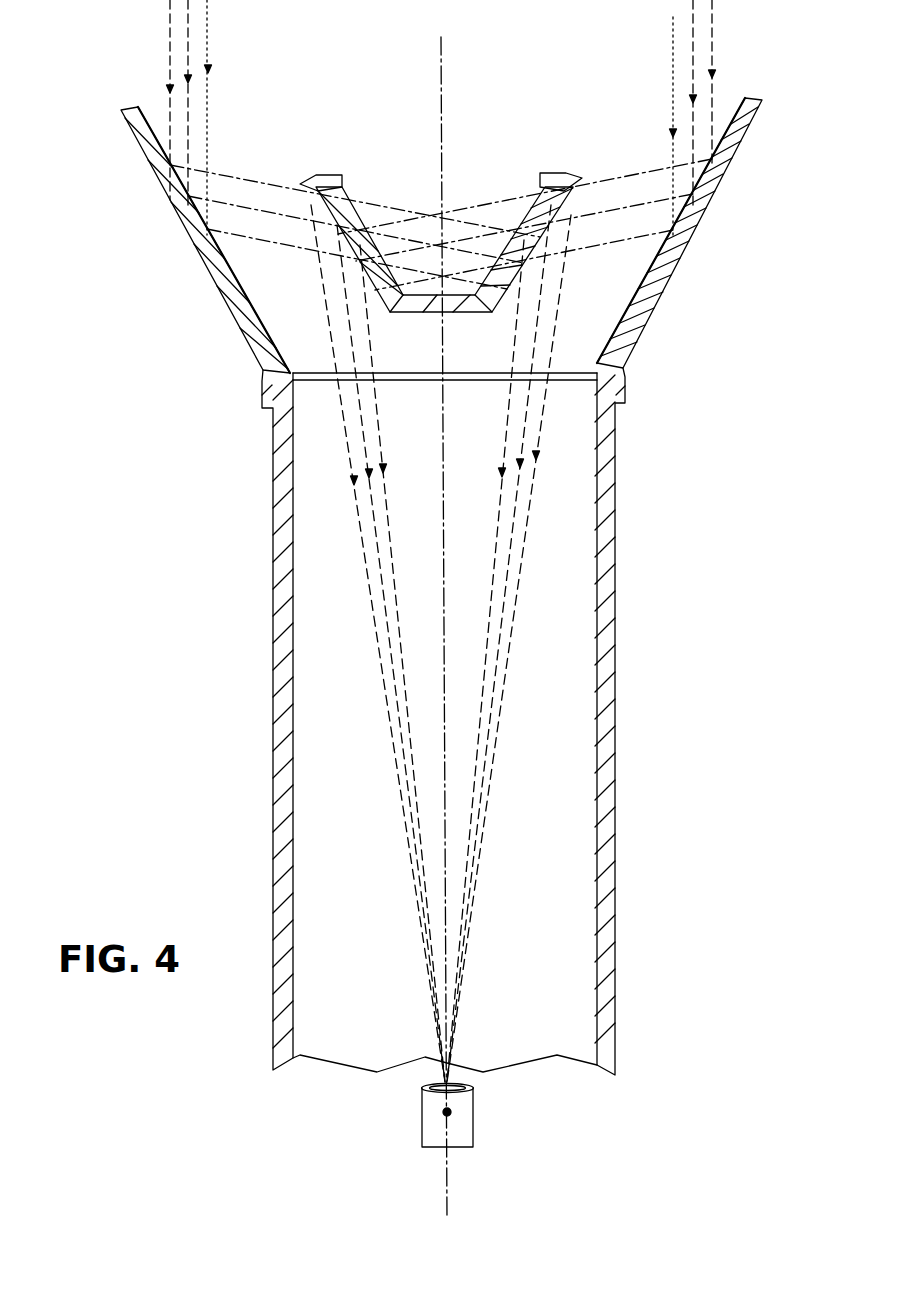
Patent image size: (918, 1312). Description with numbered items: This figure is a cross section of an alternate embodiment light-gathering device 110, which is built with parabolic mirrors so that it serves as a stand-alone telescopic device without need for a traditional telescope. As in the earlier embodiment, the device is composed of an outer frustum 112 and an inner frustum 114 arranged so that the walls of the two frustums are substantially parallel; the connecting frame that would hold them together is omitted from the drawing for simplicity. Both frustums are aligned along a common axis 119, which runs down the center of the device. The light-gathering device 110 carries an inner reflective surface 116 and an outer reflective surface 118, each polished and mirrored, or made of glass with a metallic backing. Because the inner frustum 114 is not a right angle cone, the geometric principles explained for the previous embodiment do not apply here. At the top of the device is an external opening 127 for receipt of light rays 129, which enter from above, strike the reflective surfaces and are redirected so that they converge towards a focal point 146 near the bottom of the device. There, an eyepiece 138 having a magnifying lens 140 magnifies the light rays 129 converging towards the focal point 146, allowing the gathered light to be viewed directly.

The light-gathering device 110 is at (676, 287).
The outer frustum 112 is at (220, 290).
The inner frustum 114 is at (354, 207).
The inner reflective surface 116 is at (198, 207).
The outer reflective surface 118 is at (327, 177).
The common axis 119 is at (474, 40).
The external opening 127 is at (257, 184).
The light rays 129 is at (208, 50).
The eyepiece 138 is at (472, 1092).
The magnifying lens 140 is at (428, 1100).
The focal point 146 is at (450, 1111).